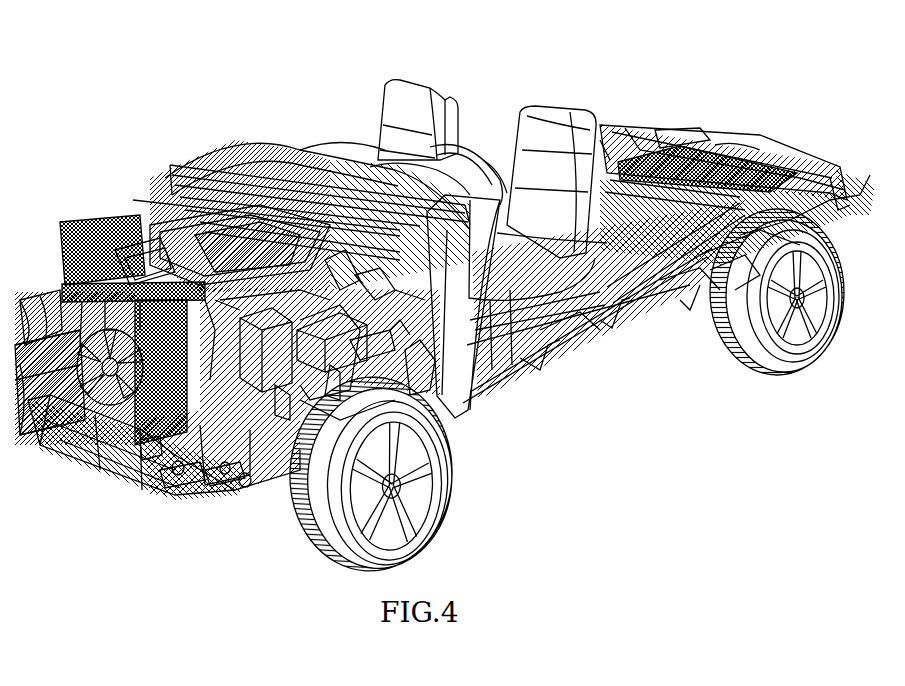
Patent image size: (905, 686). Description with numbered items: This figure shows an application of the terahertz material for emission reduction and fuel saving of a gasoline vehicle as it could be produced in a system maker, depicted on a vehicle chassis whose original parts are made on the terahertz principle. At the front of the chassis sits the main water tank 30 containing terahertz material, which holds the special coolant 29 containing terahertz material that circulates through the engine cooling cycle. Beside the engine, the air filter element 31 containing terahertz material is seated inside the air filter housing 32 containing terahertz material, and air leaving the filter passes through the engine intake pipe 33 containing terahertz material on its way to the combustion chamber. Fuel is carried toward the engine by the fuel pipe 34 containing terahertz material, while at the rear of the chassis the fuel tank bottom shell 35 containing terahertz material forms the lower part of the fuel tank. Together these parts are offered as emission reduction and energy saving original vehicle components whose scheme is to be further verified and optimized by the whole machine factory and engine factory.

The special coolant containing terahertz material 29 is at (172, 305).
The main water tank containing terahertz material 30 is at (200, 255).
The air filter element containing terahertz material 31 is at (85, 220).
The air filter housing containing terahertz material 32 is at (106, 222).
The engine intake pipe containing terahertz material 33 is at (120, 255).
The fuel pipe containing terahertz material 34 is at (270, 225).
The fuel tank bottom shell containing terahertz material 35 is at (652, 143).